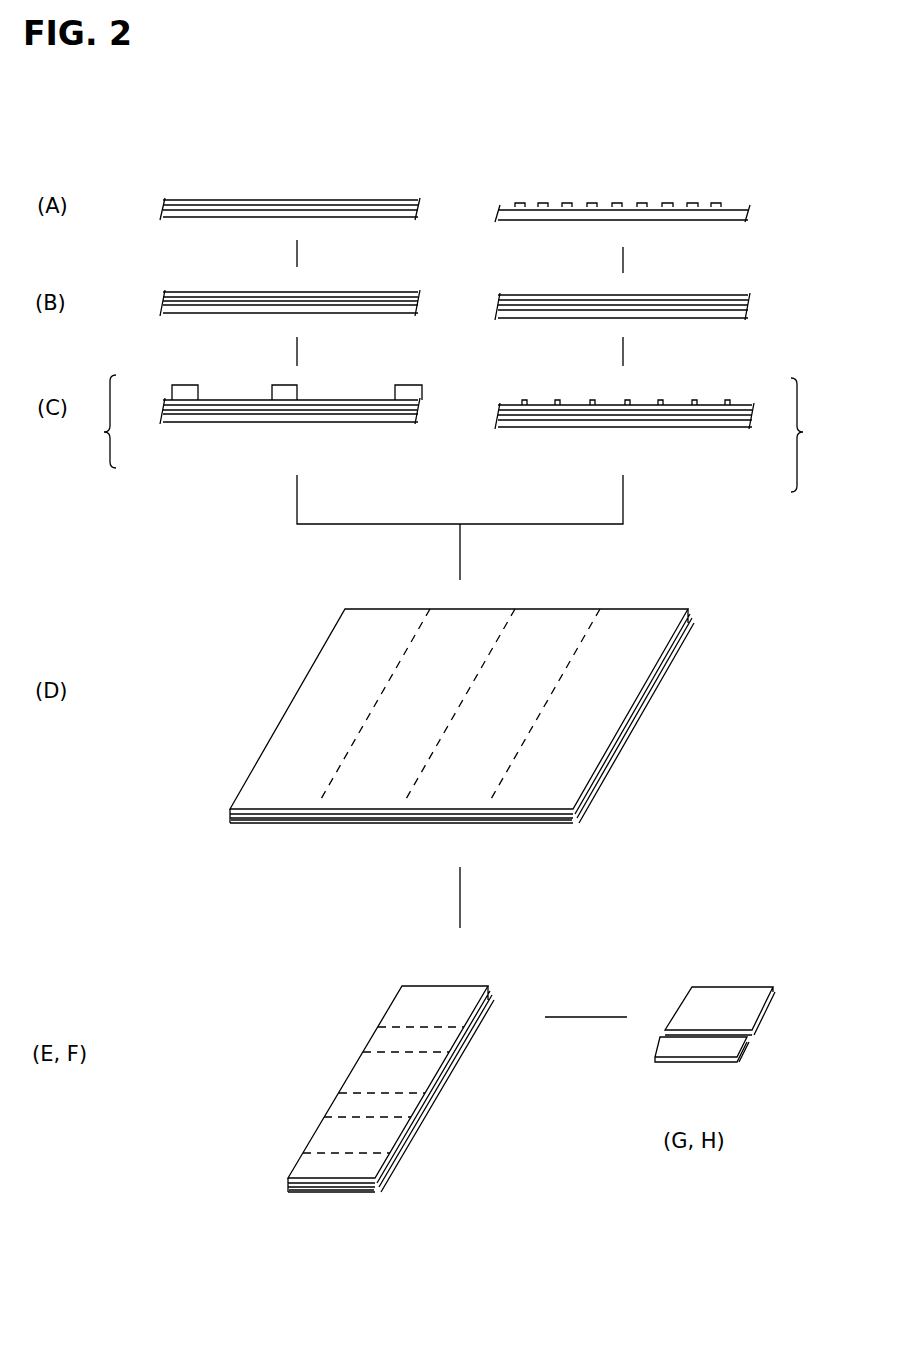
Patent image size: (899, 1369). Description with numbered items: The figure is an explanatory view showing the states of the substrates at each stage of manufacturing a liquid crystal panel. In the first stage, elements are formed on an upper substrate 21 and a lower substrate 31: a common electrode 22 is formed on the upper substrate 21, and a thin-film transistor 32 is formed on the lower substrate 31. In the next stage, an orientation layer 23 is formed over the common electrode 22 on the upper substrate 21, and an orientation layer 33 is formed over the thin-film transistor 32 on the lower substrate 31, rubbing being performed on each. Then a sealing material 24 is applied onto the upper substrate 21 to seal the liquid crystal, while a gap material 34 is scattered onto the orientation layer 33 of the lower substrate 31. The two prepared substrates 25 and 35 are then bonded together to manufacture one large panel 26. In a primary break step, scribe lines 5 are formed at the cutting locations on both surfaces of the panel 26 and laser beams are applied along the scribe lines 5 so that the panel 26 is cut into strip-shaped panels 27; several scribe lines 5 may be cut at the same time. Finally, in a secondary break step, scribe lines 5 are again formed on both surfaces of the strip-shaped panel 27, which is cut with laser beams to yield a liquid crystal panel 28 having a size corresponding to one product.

The scribe line 5 is at (395, 667).
The upper substrate 21 is at (163, 213).
The common electrode 22 is at (165, 202).
The orientation layer 23 is at (165, 293).
The sealing material 24 is at (172, 393).
The substrate 25 is at (540, 993).
The large panel 26 is at (695, 790).
The strip-shaped panel 27 is at (422, 1112).
The liquid crystal panel 28 is at (753, 1035).
The lower substrate 31 is at (748, 217).
The thin-film transistor 32 is at (718, 205).
The orientation layer 33 is at (745, 297).
The gap material 34 is at (733, 402).
The substrate 35 is at (460, 1048).